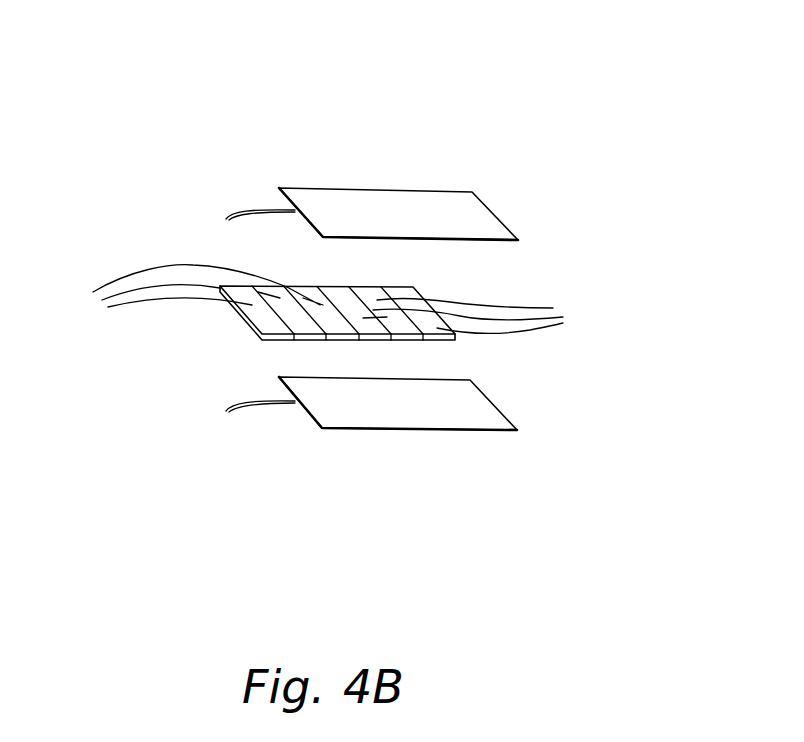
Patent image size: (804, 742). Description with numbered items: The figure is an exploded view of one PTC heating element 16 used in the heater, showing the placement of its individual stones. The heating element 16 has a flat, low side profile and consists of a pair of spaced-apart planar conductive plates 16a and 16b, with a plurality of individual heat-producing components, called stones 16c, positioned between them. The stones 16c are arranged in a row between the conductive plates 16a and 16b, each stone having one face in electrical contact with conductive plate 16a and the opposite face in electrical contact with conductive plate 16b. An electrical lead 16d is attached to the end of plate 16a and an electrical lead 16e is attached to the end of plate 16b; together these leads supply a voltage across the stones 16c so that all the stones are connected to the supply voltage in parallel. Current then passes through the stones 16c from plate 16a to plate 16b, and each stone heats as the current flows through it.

The PTC heating element 16 is at (268, 98).
The conductive plate 16a is at (449, 208).
The conductive plate 16b is at (370, 412).
The stones 16c is at (337, 299).
The electrical lead 16d is at (243, 210).
The electrical lead 16e is at (243, 401).